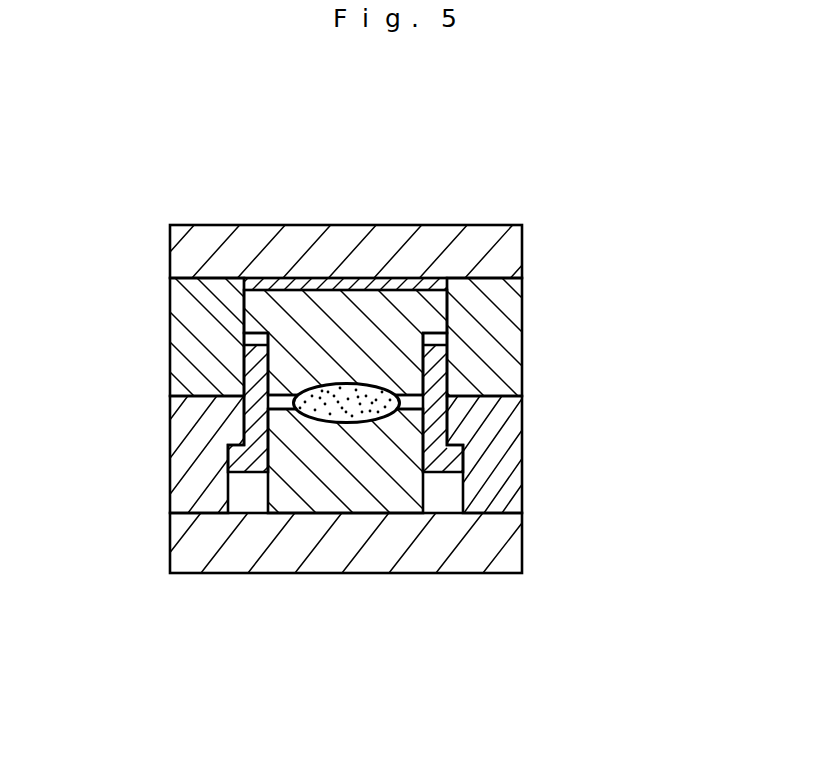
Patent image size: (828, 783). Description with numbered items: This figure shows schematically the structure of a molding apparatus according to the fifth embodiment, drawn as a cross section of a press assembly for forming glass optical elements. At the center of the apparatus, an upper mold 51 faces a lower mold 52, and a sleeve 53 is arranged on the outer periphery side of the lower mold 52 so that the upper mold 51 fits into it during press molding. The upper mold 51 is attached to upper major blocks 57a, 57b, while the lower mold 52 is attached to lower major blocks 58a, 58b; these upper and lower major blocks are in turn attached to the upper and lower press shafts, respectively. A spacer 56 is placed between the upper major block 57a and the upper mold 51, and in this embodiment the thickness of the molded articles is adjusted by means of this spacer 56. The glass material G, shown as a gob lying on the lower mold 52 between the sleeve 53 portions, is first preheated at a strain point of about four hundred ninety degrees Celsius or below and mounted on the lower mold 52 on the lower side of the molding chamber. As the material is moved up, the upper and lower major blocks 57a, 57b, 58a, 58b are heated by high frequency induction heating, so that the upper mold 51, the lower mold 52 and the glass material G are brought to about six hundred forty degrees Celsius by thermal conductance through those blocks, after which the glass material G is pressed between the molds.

The upper major block 57a is at (190, 257).
The upper major block 57b is at (195, 357).
The spacer 56 is at (365, 280).
The upper mold 51 is at (415, 307).
The sleeve 53 is at (440, 380).
The lower mold 52 is at (368, 455).
The glass material G is at (312, 411).
The lower major block 58b is at (500, 472).
The lower major block 58a is at (495, 542).